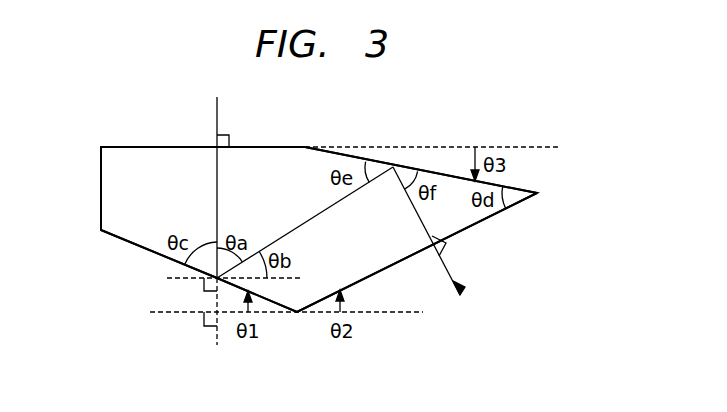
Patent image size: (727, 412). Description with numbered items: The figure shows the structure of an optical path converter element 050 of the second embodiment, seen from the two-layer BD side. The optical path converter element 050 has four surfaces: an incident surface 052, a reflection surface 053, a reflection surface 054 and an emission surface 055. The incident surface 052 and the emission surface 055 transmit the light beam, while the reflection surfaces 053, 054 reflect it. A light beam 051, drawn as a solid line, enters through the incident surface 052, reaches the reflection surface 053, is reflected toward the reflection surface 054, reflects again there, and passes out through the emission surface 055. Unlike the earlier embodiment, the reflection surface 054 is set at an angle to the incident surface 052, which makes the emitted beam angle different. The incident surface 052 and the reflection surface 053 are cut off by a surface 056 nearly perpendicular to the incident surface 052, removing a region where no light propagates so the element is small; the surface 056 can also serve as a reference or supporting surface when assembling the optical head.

The optical path converter element 050 is at (113, 197).
The light beam 051 is at (218, 103).
The incident surface 052 is at (131, 147).
The reflection surface 053 is at (143, 248).
The reflection surface 054 is at (378, 162).
The emission surface 055 is at (490, 216).
The surface 056 is at (101, 155).